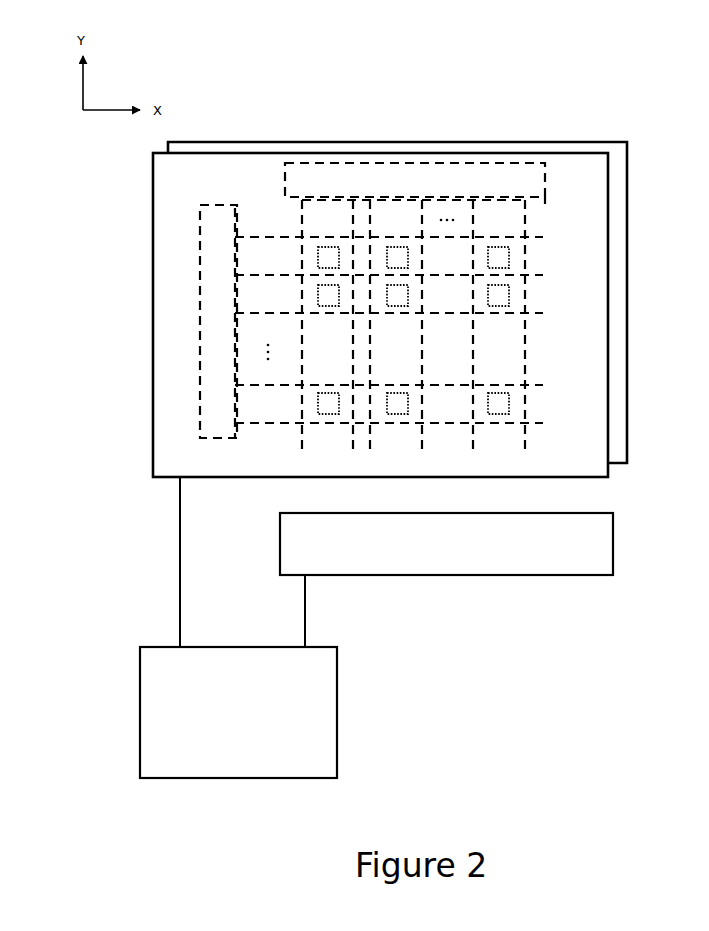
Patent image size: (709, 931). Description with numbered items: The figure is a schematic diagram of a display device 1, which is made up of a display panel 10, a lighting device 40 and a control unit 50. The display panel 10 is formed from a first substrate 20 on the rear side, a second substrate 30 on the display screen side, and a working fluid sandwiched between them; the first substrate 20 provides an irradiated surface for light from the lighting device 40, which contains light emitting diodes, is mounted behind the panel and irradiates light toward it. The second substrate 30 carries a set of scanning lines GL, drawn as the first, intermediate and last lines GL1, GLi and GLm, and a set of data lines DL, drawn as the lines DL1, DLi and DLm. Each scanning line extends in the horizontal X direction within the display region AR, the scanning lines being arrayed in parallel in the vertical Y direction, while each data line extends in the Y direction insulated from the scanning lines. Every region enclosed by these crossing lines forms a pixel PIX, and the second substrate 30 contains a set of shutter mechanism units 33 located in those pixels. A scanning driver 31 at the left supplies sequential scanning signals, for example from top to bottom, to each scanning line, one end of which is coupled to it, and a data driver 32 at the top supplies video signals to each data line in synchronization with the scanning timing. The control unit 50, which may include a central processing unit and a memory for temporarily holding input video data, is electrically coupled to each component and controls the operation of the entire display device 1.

The display device 1 is at (310, 17).
The display panel 10 is at (253, 106).
The first substrate 20 is at (633, 157).
The second substrate 30 is at (592, 151).
The scanning driver 31 is at (210, 412).
The data driver 32 is at (283, 179).
The shutter mechanism unit 33 is at (514, 319).
The lighting device 40 is at (465, 562).
The control unit 50 is at (315, 708).
The display region AR is at (539, 300).
The pixel PIX is at (378, 422).
The scanning lines GL is at (68, 160).
The first scanning line GL1 is at (274, 236).
The j-th scanning line GLi is at (263, 385).
The m-th scanning line GLm is at (265, 423).
The data lines DL is at (555, 83).
The first data line DL1 is at (303, 218).
The i-th data line DLi is at (474, 212).
The last data line DLm is at (527, 214).